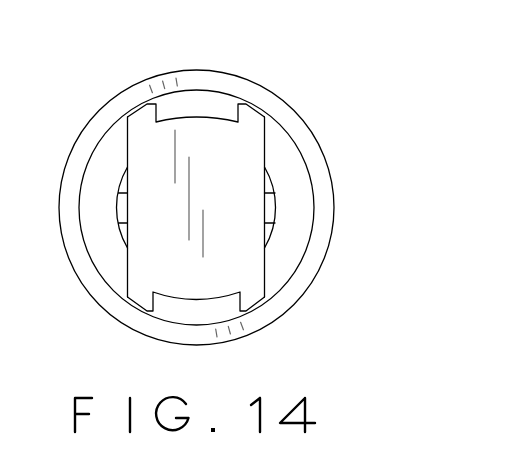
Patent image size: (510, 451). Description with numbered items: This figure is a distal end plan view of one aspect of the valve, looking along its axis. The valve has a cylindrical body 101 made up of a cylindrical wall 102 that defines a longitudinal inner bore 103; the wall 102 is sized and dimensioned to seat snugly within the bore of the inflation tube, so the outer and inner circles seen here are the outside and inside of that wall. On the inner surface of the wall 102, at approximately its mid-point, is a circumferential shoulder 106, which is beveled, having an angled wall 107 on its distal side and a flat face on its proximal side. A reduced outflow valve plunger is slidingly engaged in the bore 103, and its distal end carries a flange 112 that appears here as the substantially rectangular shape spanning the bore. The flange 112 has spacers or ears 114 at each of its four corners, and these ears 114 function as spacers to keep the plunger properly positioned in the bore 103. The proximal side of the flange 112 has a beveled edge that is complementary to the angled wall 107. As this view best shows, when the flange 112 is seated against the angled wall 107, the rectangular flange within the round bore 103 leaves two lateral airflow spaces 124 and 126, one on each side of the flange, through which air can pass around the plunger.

The cylindrical body 101 is at (222, 68).
The cylindrical wall 102 is at (311, 280).
The longitudinal inner bore 103 is at (97, 200).
The circumferential shoulder 106 is at (105, 158).
The angled wall 107 is at (288, 166).
The flange 112 is at (150, 258).
The ears 114 is at (139, 121).
The lateral airflow space 124 is at (122, 211).
The lateral airflow space 126 is at (273, 211).